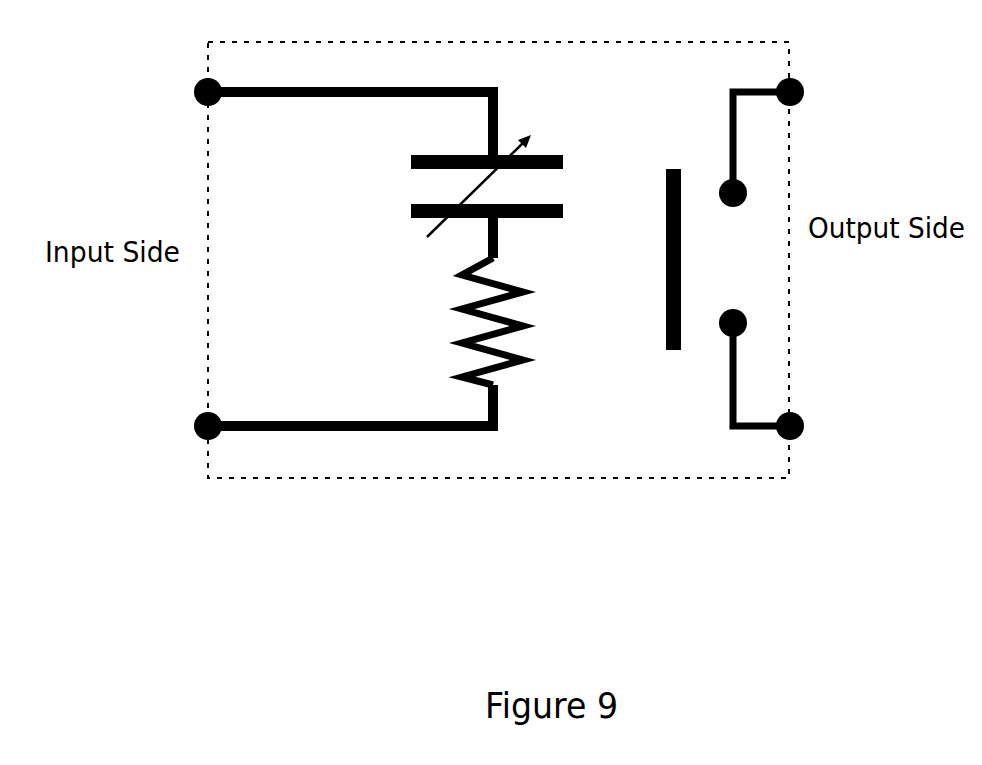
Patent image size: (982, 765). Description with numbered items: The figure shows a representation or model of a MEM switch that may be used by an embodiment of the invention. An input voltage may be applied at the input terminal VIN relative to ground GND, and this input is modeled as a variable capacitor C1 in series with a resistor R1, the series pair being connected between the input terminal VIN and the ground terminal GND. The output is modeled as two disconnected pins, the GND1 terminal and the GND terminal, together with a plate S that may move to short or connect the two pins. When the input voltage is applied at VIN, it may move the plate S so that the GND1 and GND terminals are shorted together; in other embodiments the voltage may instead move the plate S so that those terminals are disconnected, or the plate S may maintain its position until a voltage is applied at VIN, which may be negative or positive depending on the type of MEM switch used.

The variable capacitor C1 is at (455, 186).
The resistor R1 is at (440, 321).
The plate S is at (687, 259).
The input terminal VIN is at (171, 92).
The ground terminal GND is at (499, 413).
The ground terminal GND1 is at (827, 90).